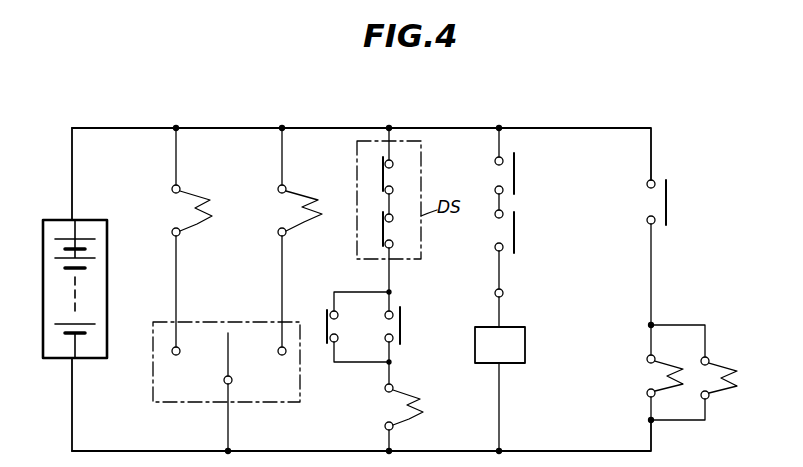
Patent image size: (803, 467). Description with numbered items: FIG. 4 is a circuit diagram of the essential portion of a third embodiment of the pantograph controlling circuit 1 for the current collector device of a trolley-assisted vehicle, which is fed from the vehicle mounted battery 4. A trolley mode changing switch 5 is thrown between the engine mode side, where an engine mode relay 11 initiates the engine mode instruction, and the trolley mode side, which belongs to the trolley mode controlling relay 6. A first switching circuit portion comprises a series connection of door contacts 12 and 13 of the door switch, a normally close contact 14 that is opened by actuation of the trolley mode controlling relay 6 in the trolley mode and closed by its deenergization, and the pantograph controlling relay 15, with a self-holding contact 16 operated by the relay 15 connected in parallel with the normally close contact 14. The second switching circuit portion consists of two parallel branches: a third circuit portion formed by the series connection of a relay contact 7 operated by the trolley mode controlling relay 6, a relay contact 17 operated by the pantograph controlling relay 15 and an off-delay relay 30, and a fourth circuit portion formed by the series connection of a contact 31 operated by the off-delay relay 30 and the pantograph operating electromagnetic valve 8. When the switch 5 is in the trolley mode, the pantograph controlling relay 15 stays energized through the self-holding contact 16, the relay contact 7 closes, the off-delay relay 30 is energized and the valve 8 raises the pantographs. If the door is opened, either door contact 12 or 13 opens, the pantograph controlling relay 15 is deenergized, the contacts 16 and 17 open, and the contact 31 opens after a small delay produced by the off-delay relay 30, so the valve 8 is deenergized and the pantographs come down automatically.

The pantograph controlling circuit 1 is at (393, 124).
The vehicle mounted battery 4 is at (57, 218).
The trolley mode changing switch 5 is at (200, 402).
The TOR relay 6 is at (327, 208).
The relay contact 7 is at (514, 175).
The pantograph controlling electromagnetic valve 8 is at (714, 351).
The engine mode relay 11 is at (205, 230).
The door contact 12 is at (382, 172).
The door contact 13 is at (382, 232).
The normally close contact 14 is at (326, 322).
The pantograph controlling relay 15 is at (418, 398).
The self-holding contact 16 is at (401, 320).
The relay contact 17 is at (514, 233).
The off-delay relay 30 is at (525, 341).
The contact 31 is at (666, 200).